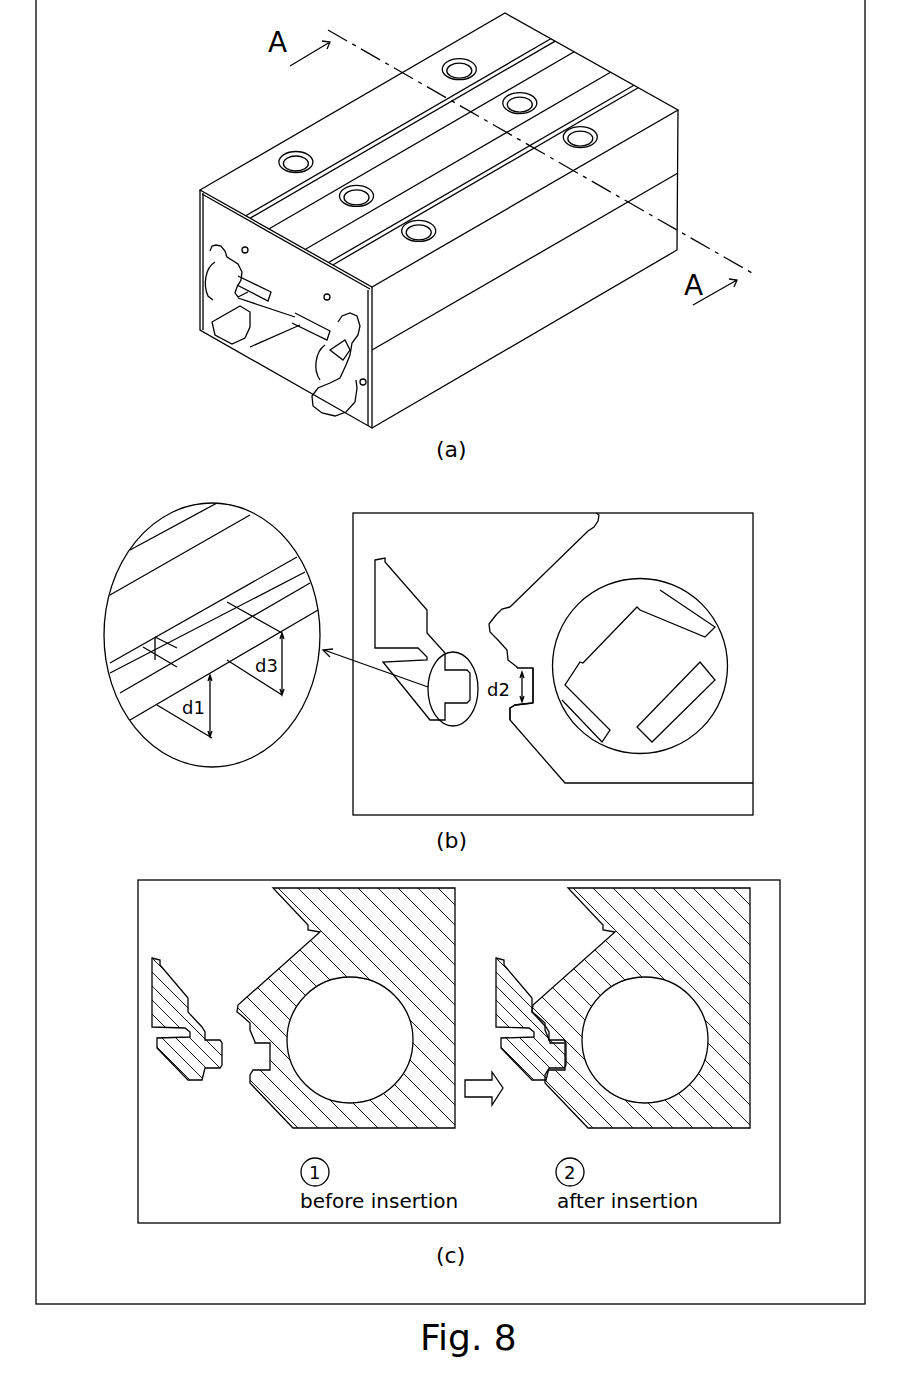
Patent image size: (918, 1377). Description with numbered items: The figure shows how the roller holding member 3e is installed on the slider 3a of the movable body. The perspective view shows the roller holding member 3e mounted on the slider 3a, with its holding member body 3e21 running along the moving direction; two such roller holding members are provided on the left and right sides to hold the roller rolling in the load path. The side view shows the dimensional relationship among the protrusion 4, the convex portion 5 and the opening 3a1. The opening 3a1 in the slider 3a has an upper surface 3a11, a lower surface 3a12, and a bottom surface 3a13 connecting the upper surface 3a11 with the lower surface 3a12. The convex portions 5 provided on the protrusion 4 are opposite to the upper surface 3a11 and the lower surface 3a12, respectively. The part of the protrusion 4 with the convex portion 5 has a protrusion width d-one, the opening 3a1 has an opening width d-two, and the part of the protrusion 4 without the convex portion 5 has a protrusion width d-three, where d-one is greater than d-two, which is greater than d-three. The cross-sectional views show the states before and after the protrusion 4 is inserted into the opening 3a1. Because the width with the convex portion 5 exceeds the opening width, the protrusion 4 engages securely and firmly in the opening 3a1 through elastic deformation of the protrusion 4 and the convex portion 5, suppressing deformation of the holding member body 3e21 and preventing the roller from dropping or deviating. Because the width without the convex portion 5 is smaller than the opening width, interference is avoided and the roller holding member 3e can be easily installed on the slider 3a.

The slider 3a is at (318, 142).
The roller holding member 3e is at (227, 327).
The holding member body 3e21 is at (158, 600).
The convex portion 5 is at (143, 647).
The protrusion 4 is at (185, 1062).
The opening 3a1 is at (530, 705).
The upper surface 3a11 is at (517, 668).
The lower surface 3a12 is at (512, 707).
The bottom surface 3a13 is at (535, 668).